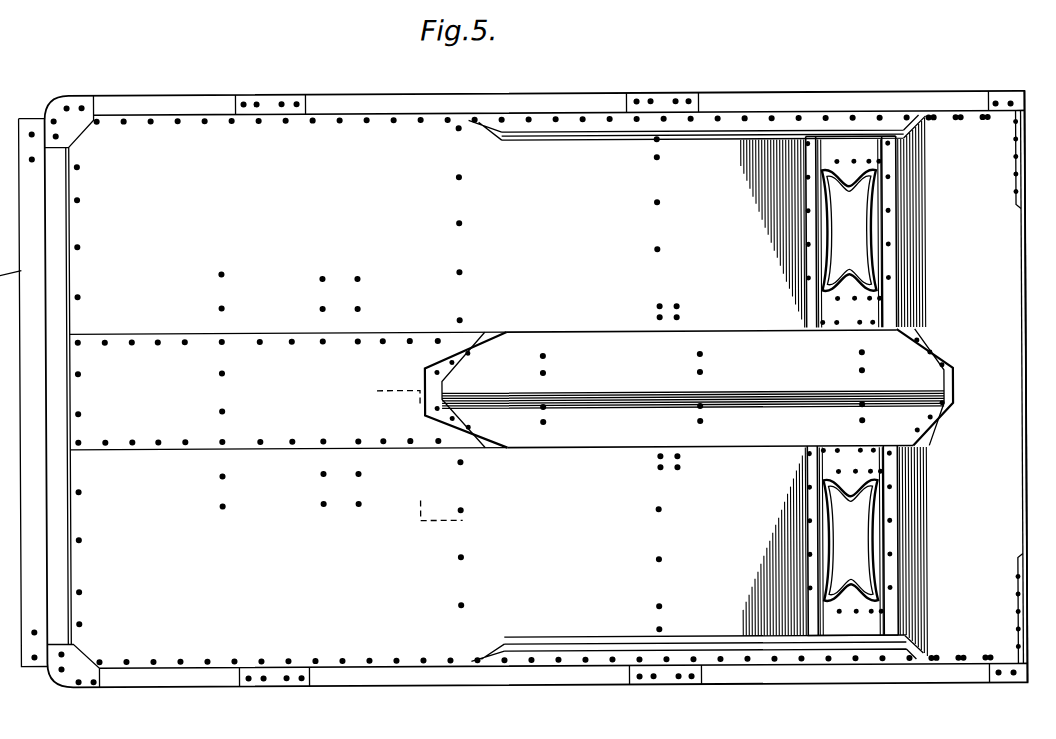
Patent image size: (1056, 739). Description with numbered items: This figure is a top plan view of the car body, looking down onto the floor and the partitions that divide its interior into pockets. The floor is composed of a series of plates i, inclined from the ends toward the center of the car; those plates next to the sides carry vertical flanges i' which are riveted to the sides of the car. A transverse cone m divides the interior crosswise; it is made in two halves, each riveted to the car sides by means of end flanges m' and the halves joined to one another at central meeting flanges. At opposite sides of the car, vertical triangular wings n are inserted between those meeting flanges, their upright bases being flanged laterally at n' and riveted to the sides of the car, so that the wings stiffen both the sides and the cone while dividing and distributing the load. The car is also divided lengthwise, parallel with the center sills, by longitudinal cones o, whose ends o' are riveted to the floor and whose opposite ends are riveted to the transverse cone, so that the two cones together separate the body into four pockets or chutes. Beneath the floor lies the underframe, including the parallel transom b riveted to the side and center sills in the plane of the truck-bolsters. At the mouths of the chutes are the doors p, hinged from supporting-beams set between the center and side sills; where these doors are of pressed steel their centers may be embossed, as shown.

The floor-plate i is at (374, 379).
The vertical flange i' is at (561, 389).
The longitudinal cone o is at (693, 389).
The end of longitudinal cone o' is at (464, 375).
The transverse cone m is at (863, 387).
The end flange m' is at (970, 386).
The vertical triangular wing n is at (1032, 386).
The laterally flanged base of wing n' is at (1010, 383).
The transom b is at (1021, 521).
The door p is at (852, 385).